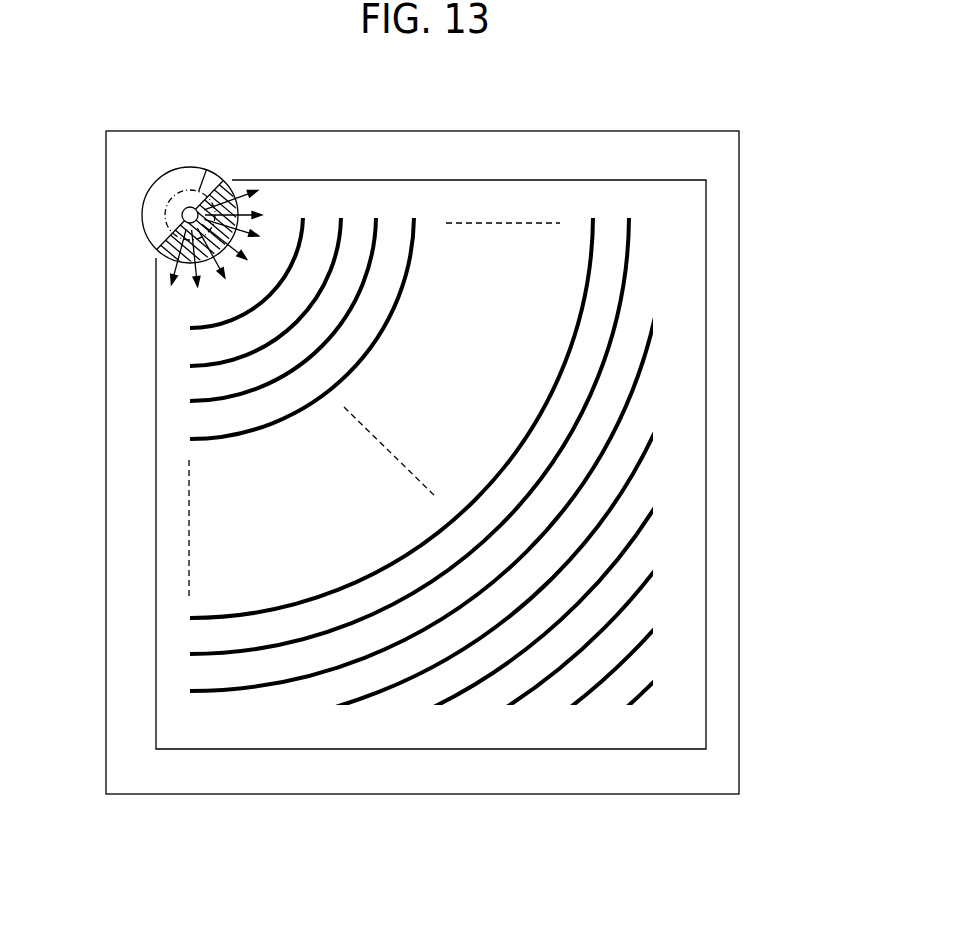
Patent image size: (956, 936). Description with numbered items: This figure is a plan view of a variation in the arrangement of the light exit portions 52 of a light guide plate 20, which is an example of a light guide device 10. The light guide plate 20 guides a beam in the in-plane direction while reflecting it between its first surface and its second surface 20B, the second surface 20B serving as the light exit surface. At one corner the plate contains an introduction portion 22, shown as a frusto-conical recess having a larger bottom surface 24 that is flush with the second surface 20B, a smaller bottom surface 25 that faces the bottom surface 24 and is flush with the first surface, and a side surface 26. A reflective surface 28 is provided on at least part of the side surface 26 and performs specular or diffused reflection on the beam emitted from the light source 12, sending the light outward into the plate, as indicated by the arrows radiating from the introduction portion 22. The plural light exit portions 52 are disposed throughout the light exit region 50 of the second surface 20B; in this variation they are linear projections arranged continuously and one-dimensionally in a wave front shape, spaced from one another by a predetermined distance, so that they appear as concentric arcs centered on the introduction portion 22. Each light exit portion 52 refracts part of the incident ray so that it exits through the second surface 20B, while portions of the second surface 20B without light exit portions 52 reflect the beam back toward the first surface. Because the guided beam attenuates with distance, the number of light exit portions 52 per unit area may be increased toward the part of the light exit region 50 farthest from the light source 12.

The display device 10 is at (496, 464).
The light guide plate 20 is at (738, 387).
The second surface 20B is at (704, 167).
The light exit region 50 is at (486, 369).
The light exit portions 52 is at (341, 218).
The introduction portion 22 is at (131, 194).
The bottom surface 24 is at (153, 215).
The bottom surface 25 is at (182, 218).
The light source 12 is at (198, 188).
The reflective surface 28 is at (163, 257).
The side surface 26 is at (168, 244).